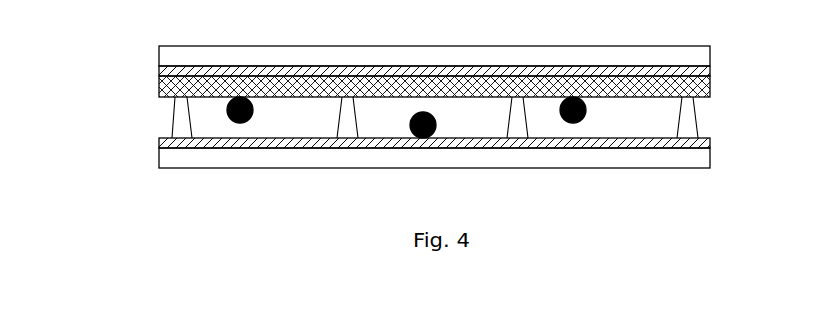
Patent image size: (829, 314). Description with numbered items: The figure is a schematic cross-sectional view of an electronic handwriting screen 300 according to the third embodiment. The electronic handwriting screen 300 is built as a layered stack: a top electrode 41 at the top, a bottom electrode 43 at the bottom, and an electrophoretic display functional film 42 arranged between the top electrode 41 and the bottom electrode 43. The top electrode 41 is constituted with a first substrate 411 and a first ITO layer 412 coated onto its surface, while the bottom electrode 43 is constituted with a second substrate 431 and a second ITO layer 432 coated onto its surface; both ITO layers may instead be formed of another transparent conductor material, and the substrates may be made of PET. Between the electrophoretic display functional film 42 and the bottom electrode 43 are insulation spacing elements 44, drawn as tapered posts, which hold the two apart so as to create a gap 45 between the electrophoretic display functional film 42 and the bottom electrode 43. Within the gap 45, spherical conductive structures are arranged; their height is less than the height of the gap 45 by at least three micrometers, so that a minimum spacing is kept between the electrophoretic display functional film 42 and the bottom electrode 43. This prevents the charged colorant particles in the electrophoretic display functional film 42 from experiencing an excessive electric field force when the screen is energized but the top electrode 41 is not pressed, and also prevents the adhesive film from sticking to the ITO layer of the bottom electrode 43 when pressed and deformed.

The electronic handwriting screen 300 is at (407, 109).
The top electrode 41 is at (361, 66).
The first substrate 411 is at (163, 54).
The first ITO layer 412 is at (163, 74).
The electrophoretic display functional film 42 is at (710, 85).
The bottom electrode 43 is at (361, 154).
The second substrate 431 is at (163, 145).
The second ITO layer 432 is at (163, 166).
The insulation spacing element 44 is at (690, 129).
The gap 45 is at (612, 128).